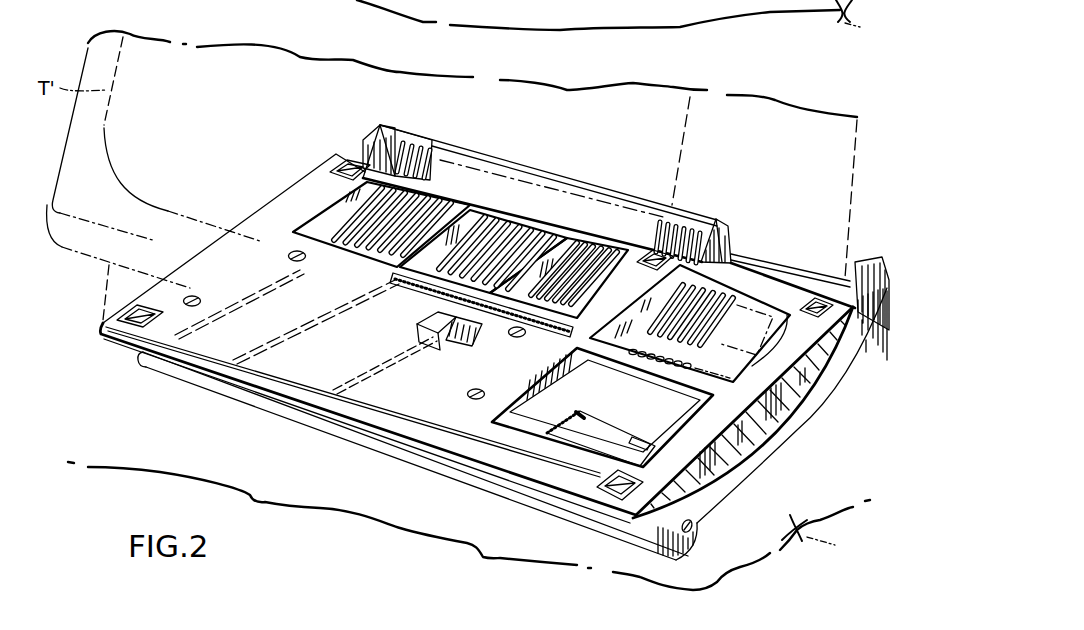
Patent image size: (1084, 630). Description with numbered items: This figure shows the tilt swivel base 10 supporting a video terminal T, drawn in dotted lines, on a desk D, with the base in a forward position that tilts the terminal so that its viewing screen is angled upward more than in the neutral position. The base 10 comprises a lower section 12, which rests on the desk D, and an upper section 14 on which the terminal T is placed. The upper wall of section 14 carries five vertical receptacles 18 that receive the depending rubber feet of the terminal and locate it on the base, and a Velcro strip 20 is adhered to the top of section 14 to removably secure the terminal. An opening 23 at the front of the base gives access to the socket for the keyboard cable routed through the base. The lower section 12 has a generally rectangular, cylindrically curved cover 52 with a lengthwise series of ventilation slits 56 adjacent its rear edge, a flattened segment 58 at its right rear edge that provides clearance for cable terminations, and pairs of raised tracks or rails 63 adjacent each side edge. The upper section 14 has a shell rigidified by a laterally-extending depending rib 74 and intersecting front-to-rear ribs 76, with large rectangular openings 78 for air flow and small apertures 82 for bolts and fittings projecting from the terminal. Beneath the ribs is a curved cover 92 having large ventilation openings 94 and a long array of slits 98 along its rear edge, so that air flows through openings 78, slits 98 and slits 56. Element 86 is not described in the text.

The tilt swivel base 10 is at (860, 403).
The lower section 12 is at (660, 502).
The upper section 14 is at (527, 482).
The vertical receptacles 18 is at (330, 166).
The Velcro strip 20 is at (393, 278).
The opening 23 is at (700, 527).
The cover 52 is at (460, 173).
The slits 56 is at (410, 157).
The flattened segment 58 is at (740, 258).
The raised tracks or rails 63 is at (372, 143).
The laterally-extending depending rib 74 is at (656, 406).
The front-to-rear-extending ribs 76 is at (470, 343).
The rectangular openings 78 is at (330, 240).
The small apertures 82 is at (288, 256).
The connector block 86 is at (440, 336).
The cover 92 is at (553, 416).
The openings or apertures 94 is at (612, 422).
The array of slits 98 is at (312, 212).
The video terminal T is at (83, 58).
The desk D is at (842, 289).